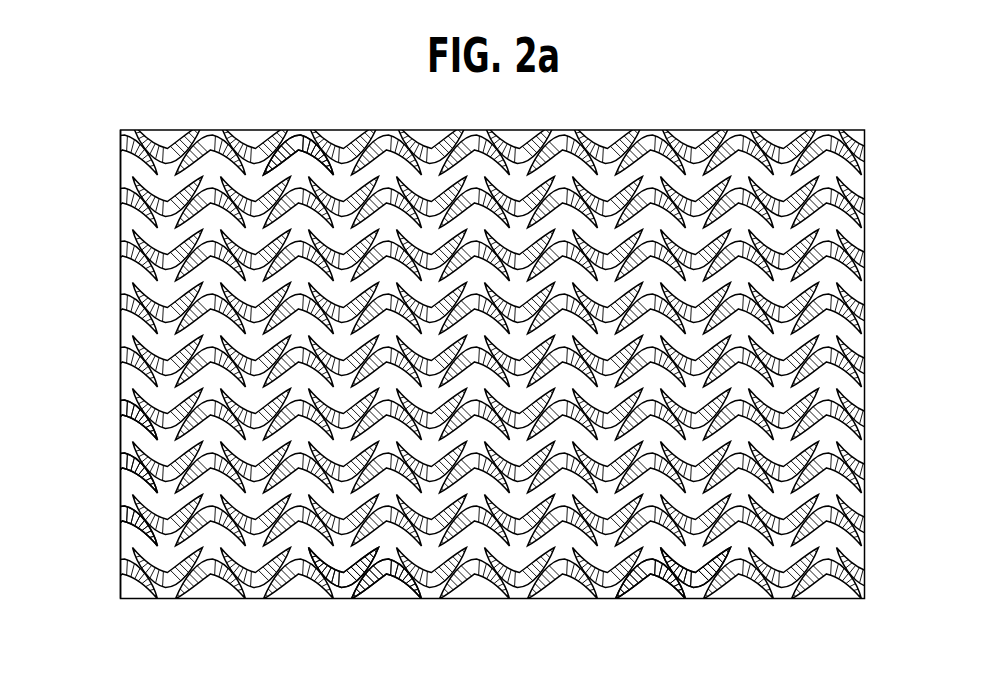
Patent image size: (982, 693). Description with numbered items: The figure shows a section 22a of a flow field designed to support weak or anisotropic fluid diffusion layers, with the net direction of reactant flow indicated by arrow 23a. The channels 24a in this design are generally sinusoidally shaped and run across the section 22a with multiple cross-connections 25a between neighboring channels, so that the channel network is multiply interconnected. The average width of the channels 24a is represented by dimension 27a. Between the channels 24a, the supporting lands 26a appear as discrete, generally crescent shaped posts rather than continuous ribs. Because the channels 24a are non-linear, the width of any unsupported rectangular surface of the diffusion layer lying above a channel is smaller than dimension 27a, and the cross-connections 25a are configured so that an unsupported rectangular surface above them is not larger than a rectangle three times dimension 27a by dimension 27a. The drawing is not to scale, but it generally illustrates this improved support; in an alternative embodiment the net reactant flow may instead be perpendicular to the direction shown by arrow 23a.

The section of a flow field 22a is at (686, 119).
The arrow 23a is at (84, 324).
The channels 24a is at (130, 432).
The cross-connections 25a is at (385, 541).
The supporting lands 26a is at (700, 572).
The dimension 27a is at (292, 140).